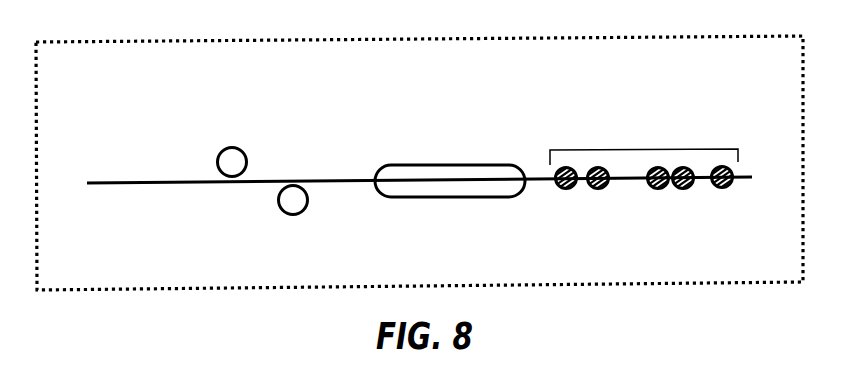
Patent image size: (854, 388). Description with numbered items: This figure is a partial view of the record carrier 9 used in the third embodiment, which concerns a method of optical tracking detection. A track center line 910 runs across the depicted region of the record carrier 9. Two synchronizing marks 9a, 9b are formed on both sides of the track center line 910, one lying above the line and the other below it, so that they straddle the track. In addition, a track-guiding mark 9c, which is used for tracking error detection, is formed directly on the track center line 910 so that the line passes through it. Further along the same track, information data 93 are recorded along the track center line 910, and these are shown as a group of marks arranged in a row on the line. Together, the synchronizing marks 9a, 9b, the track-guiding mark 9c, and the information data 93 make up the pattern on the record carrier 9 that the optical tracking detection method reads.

The record carrier 9 is at (381, 40).
The track center line 910 is at (169, 181).
The synchronizing mark 9a is at (236, 129).
The synchronizing mark 9b is at (291, 215).
The track-guiding mark 9c is at (424, 165).
The information data 93 is at (622, 149).